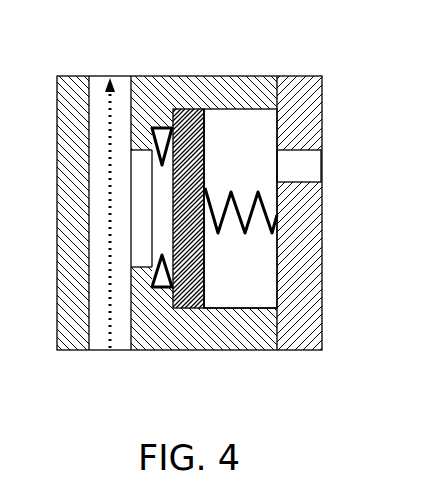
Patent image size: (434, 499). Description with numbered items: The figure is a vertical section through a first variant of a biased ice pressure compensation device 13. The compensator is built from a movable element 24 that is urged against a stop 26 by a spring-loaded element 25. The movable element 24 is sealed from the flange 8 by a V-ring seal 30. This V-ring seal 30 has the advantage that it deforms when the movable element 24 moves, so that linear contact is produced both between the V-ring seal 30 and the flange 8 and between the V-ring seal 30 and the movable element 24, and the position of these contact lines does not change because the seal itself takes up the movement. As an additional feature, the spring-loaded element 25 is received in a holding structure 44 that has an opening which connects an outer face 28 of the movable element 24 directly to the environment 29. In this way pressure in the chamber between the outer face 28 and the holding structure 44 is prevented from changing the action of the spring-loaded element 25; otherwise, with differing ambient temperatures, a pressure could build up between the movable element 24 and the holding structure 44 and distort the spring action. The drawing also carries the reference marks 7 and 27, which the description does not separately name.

The flow channel 7 is at (110, 133).
The flange 8 is at (196, 76).
The ice pressure compensation device 13 is at (222, 145).
The movable element 24 is at (207, 170).
The spring-loaded element 25 is at (231, 220).
The stop 26 is at (170, 110).
The seal seat 27 is at (158, 268).
The outer face 28 is at (213, 253).
The environment 29 is at (330, 161).
The V-ring seal 30 is at (152, 262).
The holding structure 44 is at (323, 321).